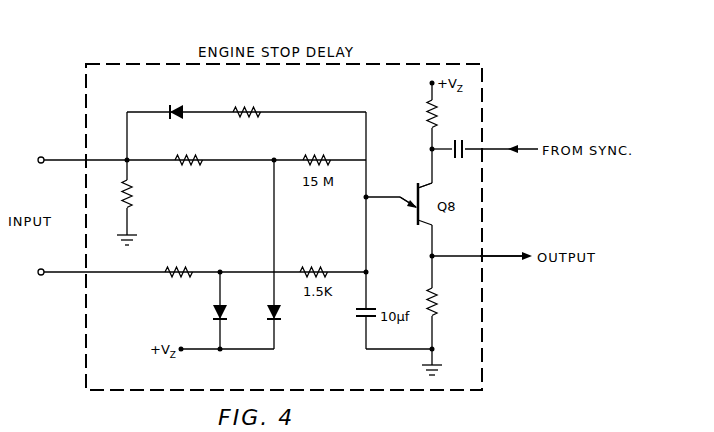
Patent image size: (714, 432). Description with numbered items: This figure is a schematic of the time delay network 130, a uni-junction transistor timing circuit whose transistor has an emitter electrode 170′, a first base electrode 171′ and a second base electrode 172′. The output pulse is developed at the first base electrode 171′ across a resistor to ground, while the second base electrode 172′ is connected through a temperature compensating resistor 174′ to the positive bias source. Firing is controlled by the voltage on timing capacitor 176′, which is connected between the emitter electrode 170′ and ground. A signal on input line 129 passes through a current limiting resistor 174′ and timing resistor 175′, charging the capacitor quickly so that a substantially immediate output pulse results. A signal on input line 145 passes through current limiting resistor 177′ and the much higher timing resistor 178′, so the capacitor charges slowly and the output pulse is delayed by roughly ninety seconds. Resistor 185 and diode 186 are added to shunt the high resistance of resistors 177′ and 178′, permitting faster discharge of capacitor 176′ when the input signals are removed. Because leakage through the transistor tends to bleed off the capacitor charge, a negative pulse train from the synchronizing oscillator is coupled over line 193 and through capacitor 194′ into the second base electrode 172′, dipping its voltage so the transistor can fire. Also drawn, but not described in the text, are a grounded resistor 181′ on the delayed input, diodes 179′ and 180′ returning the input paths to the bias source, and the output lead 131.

The time delay network 130 is at (147, 70).
The input line 145 is at (60, 160).
The input line 129 is at (62, 276).
The diode 186 is at (177, 105).
The resistor 185 is at (254, 107).
The current limiting resistor 177′ is at (193, 165).
The resistor 181′ is at (132, 206).
The temperature compensating resistor 174′ is at (185, 268).
The timing resistor 178′ is at (316, 158).
The timing resistor 175′ is at (322, 268).
The diode 179′ is at (212, 308).
The diode 180′ is at (281, 313).
The timing capacitor 176′ is at (357, 324).
The first base electrode 171′ is at (433, 298).
The emitter electrode 170′ is at (410, 207).
The second base electrode 172′ is at (426, 184).
The capacitor 194′ is at (456, 158).
The line 193 is at (500, 148).
The output terminal 131 is at (500, 259).